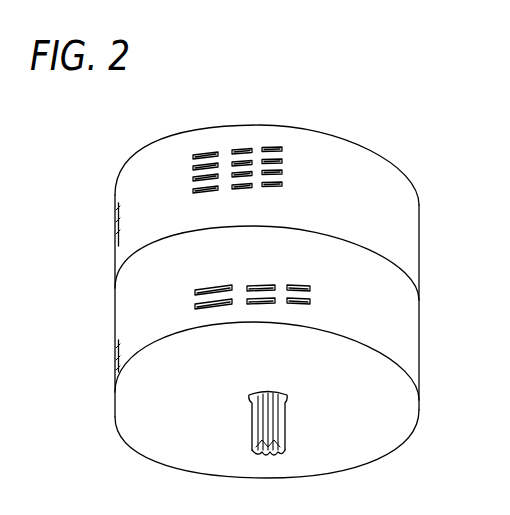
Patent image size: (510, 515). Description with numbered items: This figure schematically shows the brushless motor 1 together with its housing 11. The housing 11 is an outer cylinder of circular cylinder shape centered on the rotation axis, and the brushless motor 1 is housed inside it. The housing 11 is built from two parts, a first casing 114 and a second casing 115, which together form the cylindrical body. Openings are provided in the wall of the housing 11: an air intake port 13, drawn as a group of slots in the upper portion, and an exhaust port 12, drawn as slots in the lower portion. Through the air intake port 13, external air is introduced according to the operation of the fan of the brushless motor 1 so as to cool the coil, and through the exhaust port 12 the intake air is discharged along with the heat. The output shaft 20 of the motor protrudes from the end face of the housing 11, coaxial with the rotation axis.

The brushless motor 1 is at (400, 150).
The housing 11 is at (395, 413).
The exhaust port 12 is at (310, 287).
The air intake port 13 is at (282, 161).
The output shaft 20 is at (288, 417).
The first casing 114 is at (408, 325).
The second casing 115 is at (407, 234).